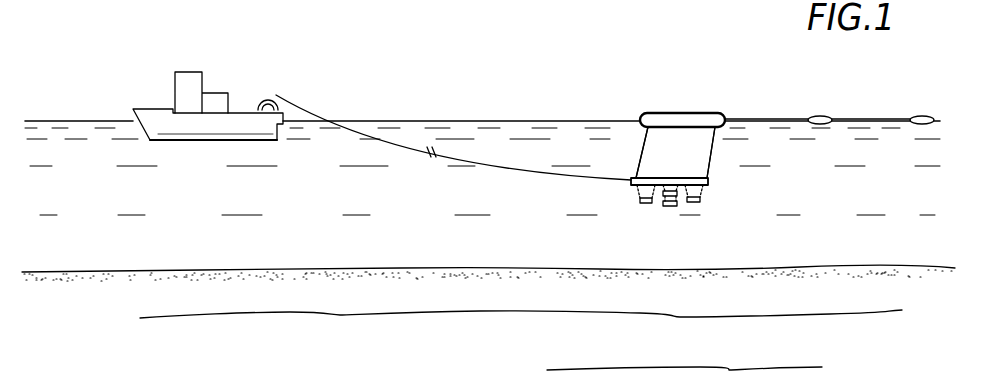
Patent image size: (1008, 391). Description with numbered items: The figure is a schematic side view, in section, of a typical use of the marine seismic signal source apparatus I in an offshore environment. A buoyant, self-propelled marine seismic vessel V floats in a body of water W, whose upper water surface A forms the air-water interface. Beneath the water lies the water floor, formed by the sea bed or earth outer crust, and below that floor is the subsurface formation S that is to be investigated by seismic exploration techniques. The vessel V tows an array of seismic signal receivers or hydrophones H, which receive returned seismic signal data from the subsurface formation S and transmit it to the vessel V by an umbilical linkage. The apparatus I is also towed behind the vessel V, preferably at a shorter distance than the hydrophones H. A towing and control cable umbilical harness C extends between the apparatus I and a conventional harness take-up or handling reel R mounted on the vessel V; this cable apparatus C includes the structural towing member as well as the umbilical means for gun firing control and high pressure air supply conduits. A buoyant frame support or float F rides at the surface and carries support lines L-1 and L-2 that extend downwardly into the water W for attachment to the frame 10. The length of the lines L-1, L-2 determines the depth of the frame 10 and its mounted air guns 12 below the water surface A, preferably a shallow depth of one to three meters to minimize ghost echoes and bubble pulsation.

The upper water surface A is at (82, 120).
The marine seismic vessel V is at (150, 108).
The handling reel R is at (272, 94).
The towing and control cable umbilical harness C is at (522, 176).
The body of water W is at (200, 201).
The marine seismic signal source apparatus I is at (690, 104).
The float F is at (708, 119).
The hydrophones H is at (915, 117).
The support line L-1 is at (646, 147).
The support line L-2 is at (710, 155).
The frame 10 is at (688, 172).
The air guns 12 is at (692, 207).
The subsurface formation S is at (385, 308).